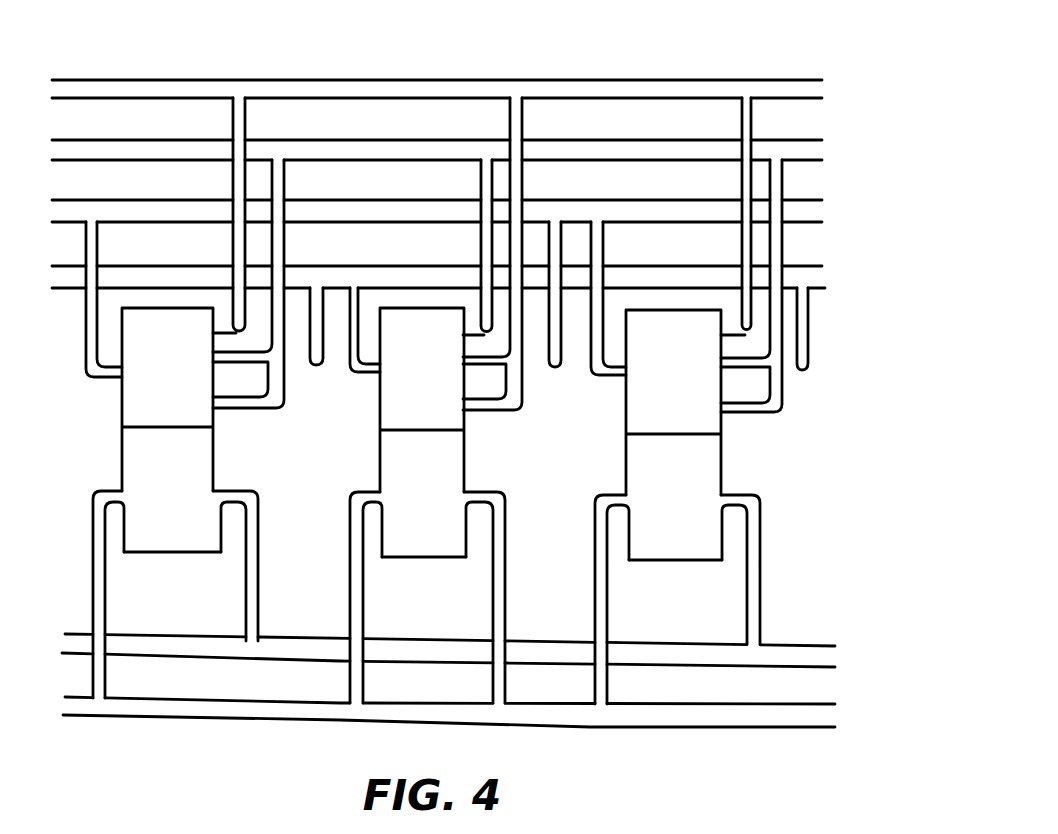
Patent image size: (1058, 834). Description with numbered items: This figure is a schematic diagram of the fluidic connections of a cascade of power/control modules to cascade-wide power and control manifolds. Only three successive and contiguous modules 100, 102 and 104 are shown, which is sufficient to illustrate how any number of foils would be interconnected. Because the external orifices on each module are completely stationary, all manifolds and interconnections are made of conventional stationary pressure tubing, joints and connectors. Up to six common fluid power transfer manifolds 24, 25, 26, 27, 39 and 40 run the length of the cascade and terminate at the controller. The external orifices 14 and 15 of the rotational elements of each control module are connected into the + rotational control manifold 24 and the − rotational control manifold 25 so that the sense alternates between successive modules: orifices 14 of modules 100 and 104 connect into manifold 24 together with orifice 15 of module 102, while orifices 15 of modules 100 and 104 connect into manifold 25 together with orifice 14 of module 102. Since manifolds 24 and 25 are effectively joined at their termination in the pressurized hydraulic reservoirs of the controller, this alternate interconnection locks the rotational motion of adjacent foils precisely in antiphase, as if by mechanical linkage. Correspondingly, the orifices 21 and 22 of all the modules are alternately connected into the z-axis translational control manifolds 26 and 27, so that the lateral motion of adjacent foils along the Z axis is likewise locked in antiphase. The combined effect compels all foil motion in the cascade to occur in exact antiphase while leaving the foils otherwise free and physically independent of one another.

The external orifice 14 is at (228, 363).
The external orifice 15 is at (90, 369).
The external orifice 21 is at (232, 324).
The external orifice 22 is at (263, 406).
The + rotational control manifold 24 is at (760, 277).
The − rotational control manifold 25 is at (662, 218).
The z-axis translational control manifold 26 is at (613, 157).
The z-axis translational control manifold 27 is at (464, 88).
The fluid power transfer manifold 39 is at (472, 652).
The fluid power transfer manifold 40 is at (670, 713).
The module 100 is at (219, 573).
The module 102 is at (464, 582).
The module 104 is at (715, 589).